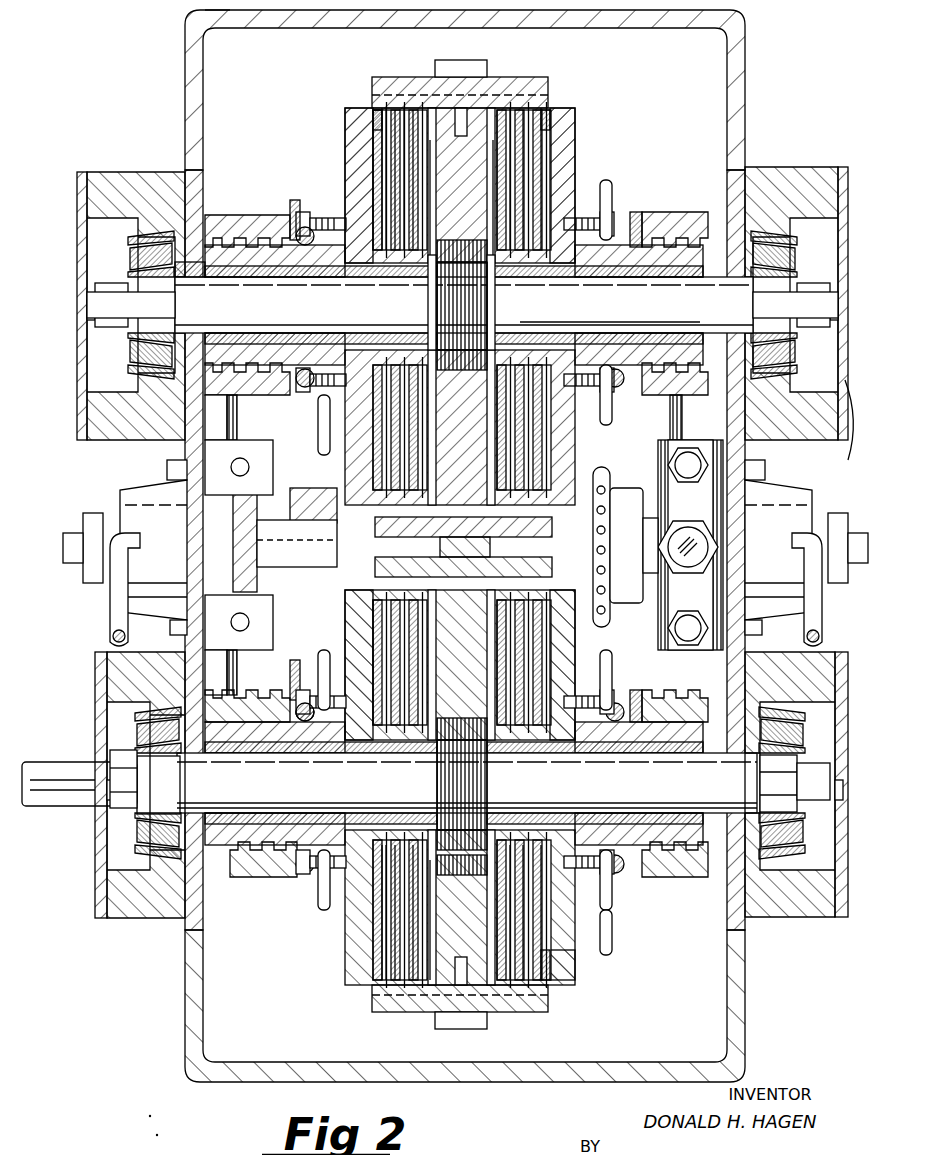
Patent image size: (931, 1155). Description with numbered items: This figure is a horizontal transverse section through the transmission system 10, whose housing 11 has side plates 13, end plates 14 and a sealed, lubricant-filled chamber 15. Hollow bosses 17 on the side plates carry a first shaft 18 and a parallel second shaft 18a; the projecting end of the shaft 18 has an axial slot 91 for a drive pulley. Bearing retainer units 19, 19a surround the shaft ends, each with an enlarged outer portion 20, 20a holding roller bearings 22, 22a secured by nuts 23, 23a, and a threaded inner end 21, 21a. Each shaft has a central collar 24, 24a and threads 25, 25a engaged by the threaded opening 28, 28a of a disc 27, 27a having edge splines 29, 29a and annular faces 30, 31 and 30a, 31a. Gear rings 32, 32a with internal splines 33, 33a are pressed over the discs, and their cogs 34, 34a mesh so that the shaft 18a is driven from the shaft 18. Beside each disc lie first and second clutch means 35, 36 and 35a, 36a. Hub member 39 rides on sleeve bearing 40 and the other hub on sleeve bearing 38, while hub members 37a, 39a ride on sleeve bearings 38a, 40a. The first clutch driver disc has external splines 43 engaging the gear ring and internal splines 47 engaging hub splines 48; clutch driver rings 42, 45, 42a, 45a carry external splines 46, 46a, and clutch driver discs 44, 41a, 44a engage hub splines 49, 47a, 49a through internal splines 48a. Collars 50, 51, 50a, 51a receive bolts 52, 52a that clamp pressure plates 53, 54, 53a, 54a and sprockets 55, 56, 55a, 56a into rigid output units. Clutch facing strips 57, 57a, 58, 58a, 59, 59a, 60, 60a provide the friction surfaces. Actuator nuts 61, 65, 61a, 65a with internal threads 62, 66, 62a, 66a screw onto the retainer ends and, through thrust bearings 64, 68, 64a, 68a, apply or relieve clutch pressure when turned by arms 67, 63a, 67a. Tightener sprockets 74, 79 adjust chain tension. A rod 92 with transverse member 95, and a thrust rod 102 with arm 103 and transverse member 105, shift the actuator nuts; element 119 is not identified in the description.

The transmission system 10 is at (768, 48).
The housing 11 is at (185, 40).
The side plates 13 is at (185, 990).
The end plates 14 is at (207, 10).
The chamber 15 is at (224, 131).
The bosses 17 is at (132, 172).
The first shaft 18 is at (210, 793).
The second shaft 18a is at (222, 307).
The bearing retainer units 19 is at (100, 838).
The bearing retainer units 19a is at (78, 378).
The enlarged portion 20 is at (107, 862).
The enlarged outer end portion 20a is at (92, 380).
The external inner end portion 21 is at (228, 850).
The threaded external inner end portion 21a is at (225, 250).
The roller bearings 22 is at (155, 835).
The roller bearings 22a is at (150, 255).
The nuts 23 is at (123, 750).
The nuts 23a is at (95, 328).
The collar 24 is at (437, 776).
The collar 24a is at (437, 305).
The threads 25 is at (490, 785).
The threads 25a is at (490, 300).
The disc 27 is at (450, 646).
The disc 27a is at (447, 166).
The threaded opening 28 is at (437, 800).
The threaded opening 28a is at (490, 290).
The splines 29 is at (490, 548).
The splines 29a is at (408, 108).
The annular face 30 is at (491, 912).
The annular face 30a is at (508, 108).
The annular face 31 is at (455, 945).
The annular face 31a is at (388, 108).
The gear ring 32 is at (380, 1000).
The gear ring 32a is at (530, 77).
The internal splines 33 is at (376, 984).
The internal splines 33a is at (548, 108).
The gear teeth 34 is at (462, 1029).
The gear teeth 34a is at (468, 60).
The first clutch means 35 is at (575, 1000).
The first clutch means 35a is at (588, 110).
The second clutch means 36 is at (318, 966).
The second clutch means 36a is at (322, 105).
The hub member 37a is at (454, 313).
The sleeve bearing 38 is at (590, 753).
The sleeve bearing 38a is at (610, 322).
The hub member 39 is at (338, 800).
The hub member 39a is at (310, 277).
The sleeve bearing 40 is at (335, 753).
The sleeve bearing 40a is at (345, 272).
The clutch driver disc 41a is at (495, 222).
The clutch driver ring 42 is at (545, 950).
The clutch driver ring 42a is at (545, 110).
The external splines 43 is at (542, 585).
The clutch driver disc 44 is at (428, 920).
The clutch driver disc 44a is at (432, 195).
The clutch driver ring 45 is at (378, 945).
The clutch driver ring 45a is at (378, 108).
The external splines 46 is at (463, 537).
The external splines 46a is at (378, 108).
The internal splines 47 is at (445, 875).
The external splines 47a is at (510, 232).
The external splines 48 is at (490, 722).
The internal splines 48a is at (436, 356).
The ring 49 is at (440, 855).
The splines 49a is at (430, 378).
The annular collar 50 is at (575, 950).
The radial collar 50a is at (612, 176).
The collar 51 is at (345, 690).
The radial collar 51a is at (327, 430).
The bolts 52 is at (305, 703).
The bolts 52a is at (385, 240).
The pressure plate 53 is at (576, 665).
The pressure plate 53a is at (575, 124).
The pressure plate 54 is at (355, 638).
The pressure plate 54a is at (350, 120).
The drive sprocket 55 is at (610, 665).
The sprocket 55a is at (615, 195).
The drive sprocket 56 is at (314, 672).
The sprocket 56a is at (310, 190).
The sleeve 57 is at (562, 818).
The annular strips of clutch facing material 57a is at (566, 272).
The annular strip of clutch facing material 58 is at (525, 965).
The annular strip of clutch facing material 58a is at (520, 135).
The annular strips of clutch facing material 59 is at (418, 985).
The annular strips of clutch facing material 59a is at (400, 148).
The annular strip of clutch facing material 60 is at (405, 962).
The annular strip of clutch facing material 60a is at (418, 155).
The actuator nut 61 is at (692, 692).
The actuator nut 61a is at (690, 212).
The internal threads 62 is at (662, 695).
The internal threads 62a is at (655, 215).
The depending arm 63a is at (676, 415).
The thrust bearing unit 64 is at (610, 878).
The thrust bearing unit 64a is at (616, 396).
The actuator nut 65 is at (245, 700).
The actuator nut 65a is at (292, 215).
The internal threads 66 is at (247, 706).
The internal threads 66a is at (225, 278).
The arm 67 is at (240, 667).
The depending arm 67a is at (245, 430).
The thrust bearing unit 68 is at (308, 878).
The thrust bearing unit 68a is at (303, 390).
The tightener sprocket 74 is at (606, 475).
The idler sprocket 79 is at (316, 488).
The axial slot 91 is at (38, 775).
The rod 92 is at (822, 636).
The transverse member 95 is at (838, 513).
The thrust rod 102 is at (110, 630).
The arm 103 is at (88, 513).
The transverse member 105 is at (63, 547).
The bracket 119 is at (845, 423).